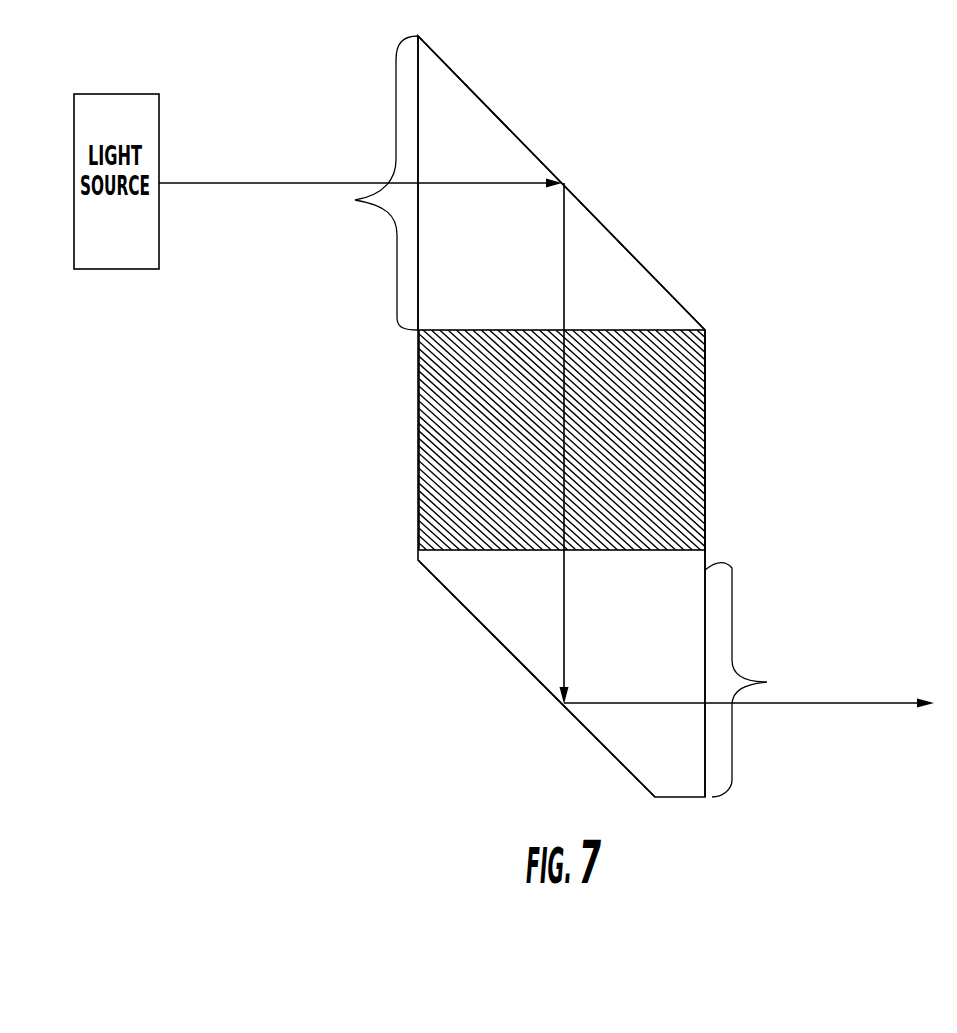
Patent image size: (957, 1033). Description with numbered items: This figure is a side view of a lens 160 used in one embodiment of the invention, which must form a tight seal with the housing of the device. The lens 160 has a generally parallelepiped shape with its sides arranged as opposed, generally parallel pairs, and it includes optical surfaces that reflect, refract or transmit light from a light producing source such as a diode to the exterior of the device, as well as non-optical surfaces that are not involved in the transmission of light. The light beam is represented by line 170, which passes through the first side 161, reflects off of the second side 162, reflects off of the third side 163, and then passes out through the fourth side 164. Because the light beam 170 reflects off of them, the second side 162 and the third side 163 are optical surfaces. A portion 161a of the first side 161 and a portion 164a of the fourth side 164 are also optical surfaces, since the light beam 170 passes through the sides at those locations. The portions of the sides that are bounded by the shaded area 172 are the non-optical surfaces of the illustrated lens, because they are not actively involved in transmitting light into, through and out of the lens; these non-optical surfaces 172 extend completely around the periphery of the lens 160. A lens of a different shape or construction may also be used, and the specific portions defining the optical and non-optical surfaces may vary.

The lens 160 is at (738, 358).
The first side 161 is at (418, 275).
The portion of the first side 161a is at (360, 183).
The second side 162 is at (617, 238).
The third side 163 is at (500, 645).
The fourth side 164 is at (712, 553).
The portion of the fourth side 164a is at (763, 680).
The light beam 170 is at (222, 184).
The shaded area 172 is at (562, 440).